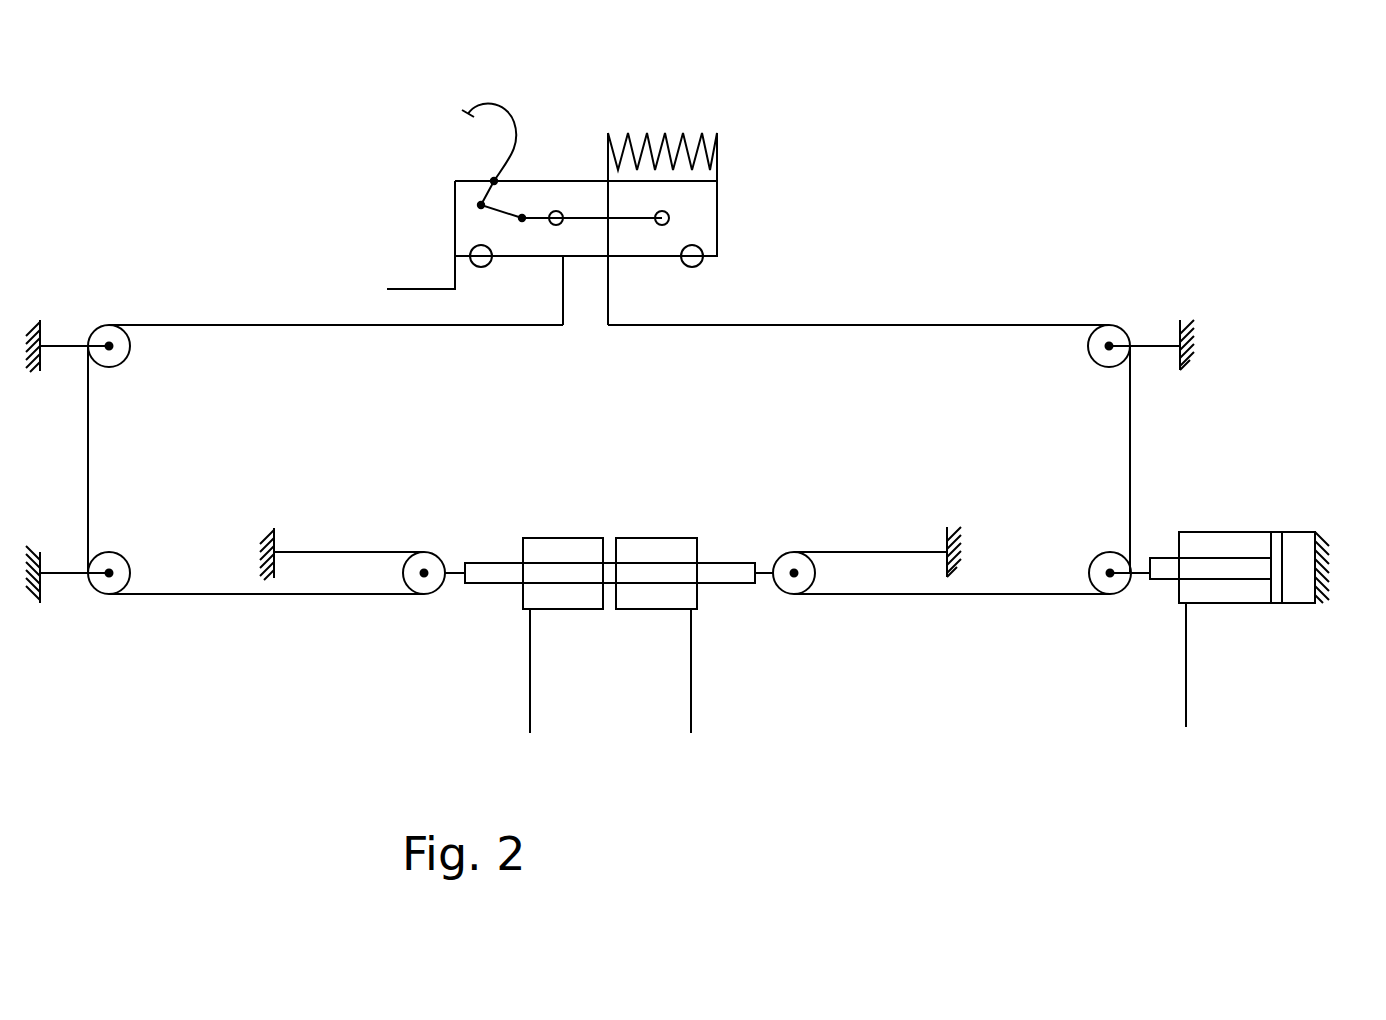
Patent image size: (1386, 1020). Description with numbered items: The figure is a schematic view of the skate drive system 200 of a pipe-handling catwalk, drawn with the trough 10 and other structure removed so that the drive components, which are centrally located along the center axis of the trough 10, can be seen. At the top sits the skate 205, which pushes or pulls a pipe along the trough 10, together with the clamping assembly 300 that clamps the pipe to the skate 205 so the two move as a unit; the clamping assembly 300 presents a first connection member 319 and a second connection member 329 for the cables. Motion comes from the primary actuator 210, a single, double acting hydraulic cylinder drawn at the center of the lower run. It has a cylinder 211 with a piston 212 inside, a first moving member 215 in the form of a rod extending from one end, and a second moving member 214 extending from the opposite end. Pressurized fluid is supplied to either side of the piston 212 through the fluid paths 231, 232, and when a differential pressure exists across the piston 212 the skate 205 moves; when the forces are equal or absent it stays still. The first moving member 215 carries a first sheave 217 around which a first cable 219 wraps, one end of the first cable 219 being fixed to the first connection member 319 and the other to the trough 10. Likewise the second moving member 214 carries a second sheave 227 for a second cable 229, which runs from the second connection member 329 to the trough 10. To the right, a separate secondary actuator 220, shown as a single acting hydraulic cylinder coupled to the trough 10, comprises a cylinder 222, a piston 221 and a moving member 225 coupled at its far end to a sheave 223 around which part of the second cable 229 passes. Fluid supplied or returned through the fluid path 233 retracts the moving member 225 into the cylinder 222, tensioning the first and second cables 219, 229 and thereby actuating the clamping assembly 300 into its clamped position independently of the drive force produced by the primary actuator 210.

The trough 10 is at (42, 327).
The skate drive system 200 is at (1025, 158).
The skate 205 is at (717, 207).
The clamping assembly 300 is at (445, 100).
The first connection member 319 is at (563, 291).
The second connection member 329 is at (608, 292).
The first cable 219 is at (257, 325).
The second cable 229 is at (958, 325).
The first sheave 217 is at (403, 575).
The second sheave 227 is at (816, 573).
The sheave 223 is at (1103, 553).
The primary actuator 210 is at (616, 607).
The cylinder 211 is at (552, 537).
The piston 212 is at (608, 537).
The first moving member 215 is at (500, 585).
The second moving member 214 is at (720, 585).
The fluid path 231 is at (533, 701).
The fluid path 232 is at (693, 701).
The secondary actuator 220 is at (1251, 589).
The cylinder 222 is at (1218, 607).
The piston 221 is at (1277, 607).
The moving member 225 is at (1160, 581).
The fluid path 233 is at (1185, 697).